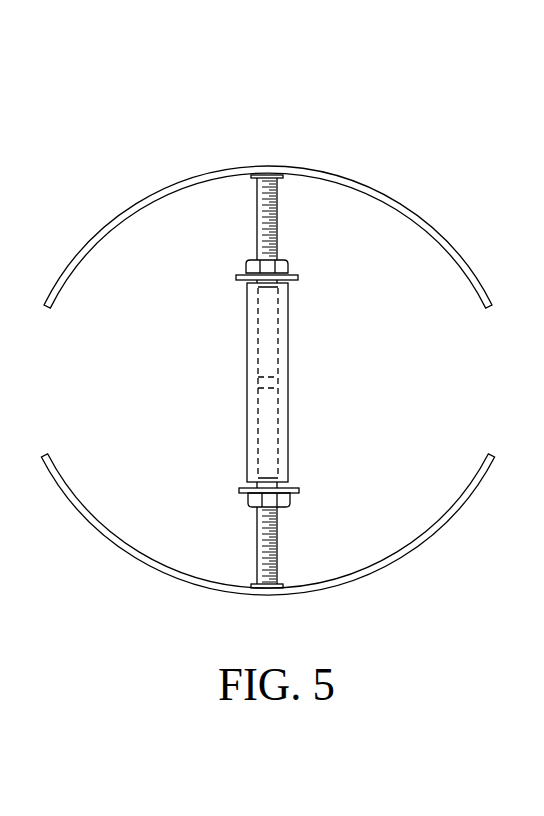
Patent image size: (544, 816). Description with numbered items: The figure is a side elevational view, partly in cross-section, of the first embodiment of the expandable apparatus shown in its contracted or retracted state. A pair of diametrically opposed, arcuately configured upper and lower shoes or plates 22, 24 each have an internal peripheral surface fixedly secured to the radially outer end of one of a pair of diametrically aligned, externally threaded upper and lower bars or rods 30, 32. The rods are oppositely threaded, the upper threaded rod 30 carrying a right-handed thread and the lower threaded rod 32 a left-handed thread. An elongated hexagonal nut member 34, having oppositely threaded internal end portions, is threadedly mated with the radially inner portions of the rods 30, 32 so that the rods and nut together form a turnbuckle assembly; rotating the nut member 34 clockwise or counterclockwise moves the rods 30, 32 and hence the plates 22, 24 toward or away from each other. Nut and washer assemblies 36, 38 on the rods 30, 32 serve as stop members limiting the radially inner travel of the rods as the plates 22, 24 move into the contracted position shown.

The upper shoe or plate 22 is at (148, 197).
The lower shoe or plate 24 is at (115, 546).
The upper threaded bar or rod 30 is at (277, 222).
The lower threaded bar or rod 32 is at (280, 542).
The elongated hexagonal nut member 34 is at (247, 393).
The nut and washer assembly 36 is at (246, 261).
The nut and washer assembly 38 is at (252, 503).